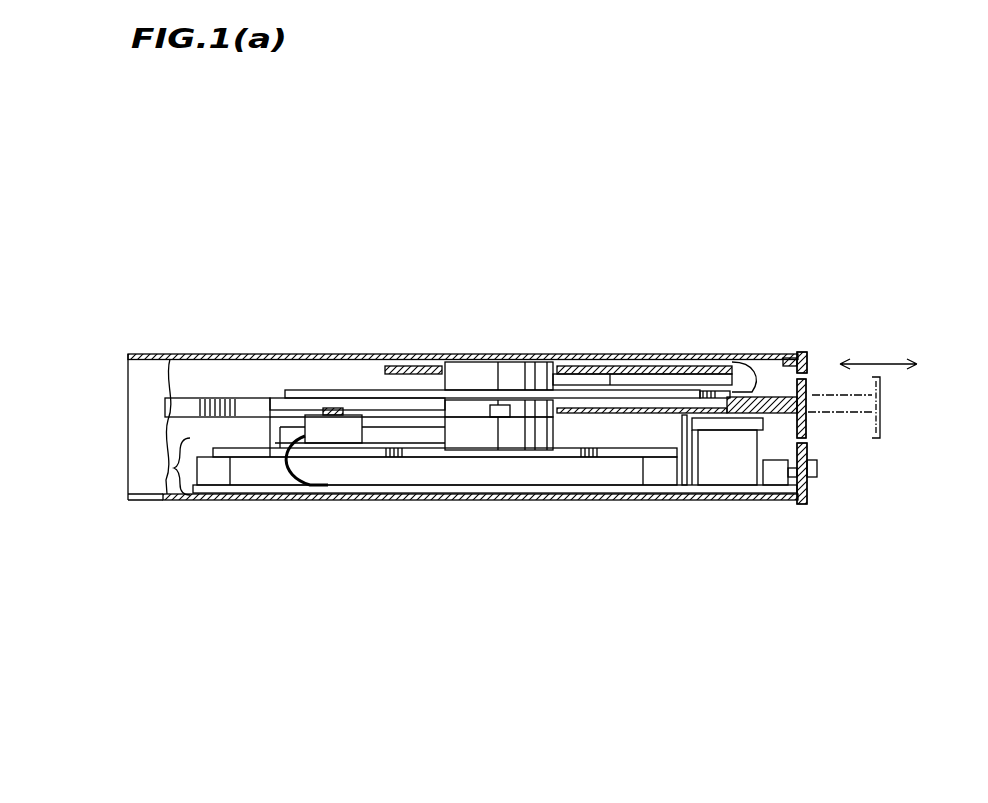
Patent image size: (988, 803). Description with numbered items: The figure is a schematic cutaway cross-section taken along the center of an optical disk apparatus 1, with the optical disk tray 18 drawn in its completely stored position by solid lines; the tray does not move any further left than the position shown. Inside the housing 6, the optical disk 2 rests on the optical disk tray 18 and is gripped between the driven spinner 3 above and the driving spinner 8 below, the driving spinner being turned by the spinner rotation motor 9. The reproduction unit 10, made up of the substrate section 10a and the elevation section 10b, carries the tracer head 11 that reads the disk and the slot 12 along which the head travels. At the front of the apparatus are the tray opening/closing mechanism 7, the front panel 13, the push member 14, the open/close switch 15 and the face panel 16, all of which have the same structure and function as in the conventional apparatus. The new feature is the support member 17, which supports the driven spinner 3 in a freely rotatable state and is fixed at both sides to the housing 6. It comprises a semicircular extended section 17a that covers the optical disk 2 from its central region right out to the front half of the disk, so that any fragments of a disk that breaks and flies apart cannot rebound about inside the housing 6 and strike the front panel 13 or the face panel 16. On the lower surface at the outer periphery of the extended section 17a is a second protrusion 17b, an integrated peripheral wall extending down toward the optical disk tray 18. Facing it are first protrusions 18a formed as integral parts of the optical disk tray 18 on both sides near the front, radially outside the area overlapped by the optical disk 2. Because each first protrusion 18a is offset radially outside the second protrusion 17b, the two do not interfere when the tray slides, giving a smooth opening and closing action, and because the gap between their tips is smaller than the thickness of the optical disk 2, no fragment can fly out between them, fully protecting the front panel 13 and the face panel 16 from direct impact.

The optical disk apparatus 1 is at (579, 170).
The optical disk 2 is at (318, 390).
The driven spinner 3 is at (480, 362).
The housing 6 is at (154, 354).
The tray opening/closing mechanism 7 is at (725, 472).
The driving spinner 8 is at (467, 398).
The spinner rotation motor 9 is at (485, 442).
The reproduction unit 10 is at (173, 483).
The substrate section 10a is at (223, 505).
The elevation section 10b is at (262, 448).
The tracer head 11 is at (338, 433).
The slot 12 is at (272, 415).
The front panel 13 is at (808, 493).
The push member 14 is at (819, 472).
The open/close switch 15 is at (806, 505).
The face panel 16 is at (808, 430).
The support member 17 is at (385, 366).
The extended section 17a is at (590, 366).
The second protrusion 17b is at (752, 370).
The optical disk tray 18 is at (780, 472).
The first protrusion 18a is at (844, 321).